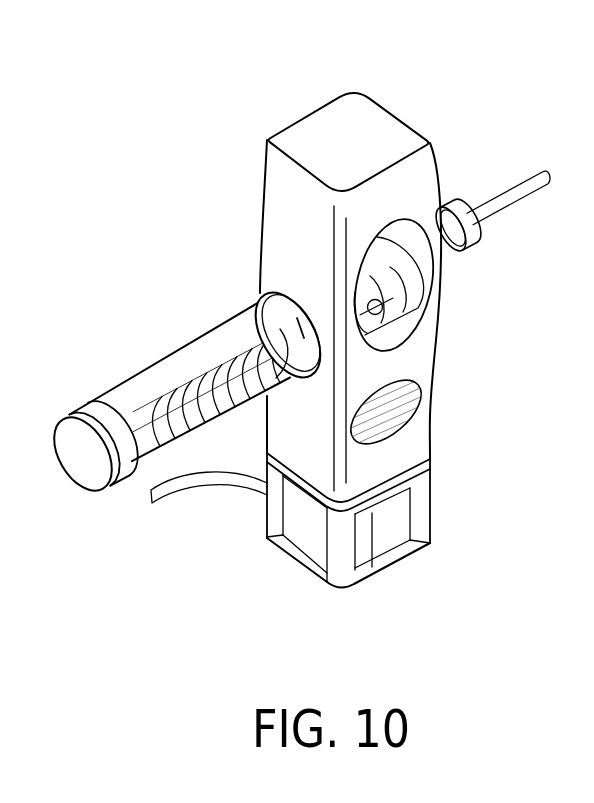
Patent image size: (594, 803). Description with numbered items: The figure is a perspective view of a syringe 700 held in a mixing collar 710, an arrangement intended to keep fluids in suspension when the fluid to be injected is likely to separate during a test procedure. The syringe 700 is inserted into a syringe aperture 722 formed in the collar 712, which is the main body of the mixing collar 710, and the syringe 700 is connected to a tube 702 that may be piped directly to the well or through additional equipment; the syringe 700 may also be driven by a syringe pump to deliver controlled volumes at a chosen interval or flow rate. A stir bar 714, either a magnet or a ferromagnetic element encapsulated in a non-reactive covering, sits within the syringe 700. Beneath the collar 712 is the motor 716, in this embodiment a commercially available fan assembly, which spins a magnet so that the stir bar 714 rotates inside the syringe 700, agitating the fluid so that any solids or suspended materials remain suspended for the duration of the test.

The mixing collar 710 is at (350, 302).
The collar 712 is at (418, 183).
The stir bar 714 is at (385, 309).
The motor 716 is at (417, 487).
The syringe 700 is at (187, 302).
The tube 702 is at (512, 200).
The syringe aperture 722 is at (296, 292).